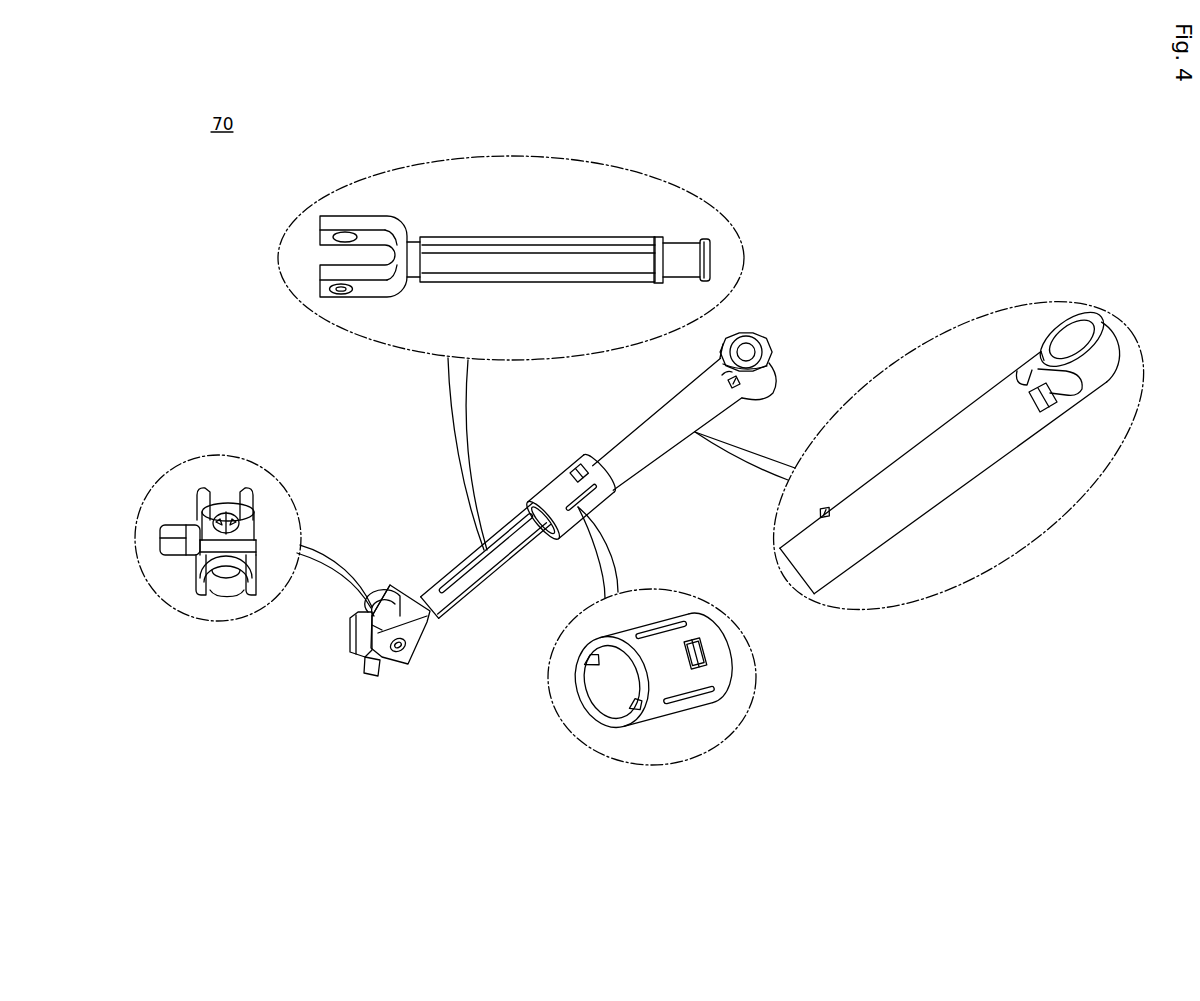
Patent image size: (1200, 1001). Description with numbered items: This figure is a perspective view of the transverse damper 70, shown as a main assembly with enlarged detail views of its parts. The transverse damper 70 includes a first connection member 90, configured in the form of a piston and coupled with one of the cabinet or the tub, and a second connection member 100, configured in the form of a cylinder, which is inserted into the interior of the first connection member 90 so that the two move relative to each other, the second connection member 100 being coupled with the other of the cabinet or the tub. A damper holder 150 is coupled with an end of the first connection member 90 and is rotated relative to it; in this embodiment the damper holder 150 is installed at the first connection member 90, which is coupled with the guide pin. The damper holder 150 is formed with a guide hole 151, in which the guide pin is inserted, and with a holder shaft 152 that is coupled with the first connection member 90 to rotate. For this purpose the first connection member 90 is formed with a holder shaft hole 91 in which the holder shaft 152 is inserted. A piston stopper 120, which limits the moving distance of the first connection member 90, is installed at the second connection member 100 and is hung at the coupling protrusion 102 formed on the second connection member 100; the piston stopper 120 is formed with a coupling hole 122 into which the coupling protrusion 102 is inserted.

The transverse damper 70 is at (666, 524).
The first connection member 90 is at (401, 196).
The holder shaft hole 91 is at (343, 293).
The second connection member 100 is at (928, 418).
The coupling protrusion 102 is at (826, 512).
The piston stopper 120 is at (547, 468).
The coupling hole 122 is at (708, 658).
The damper holder 150 is at (371, 675).
The guide hole 151 is at (236, 521).
The holder shaft 152 is at (218, 578).